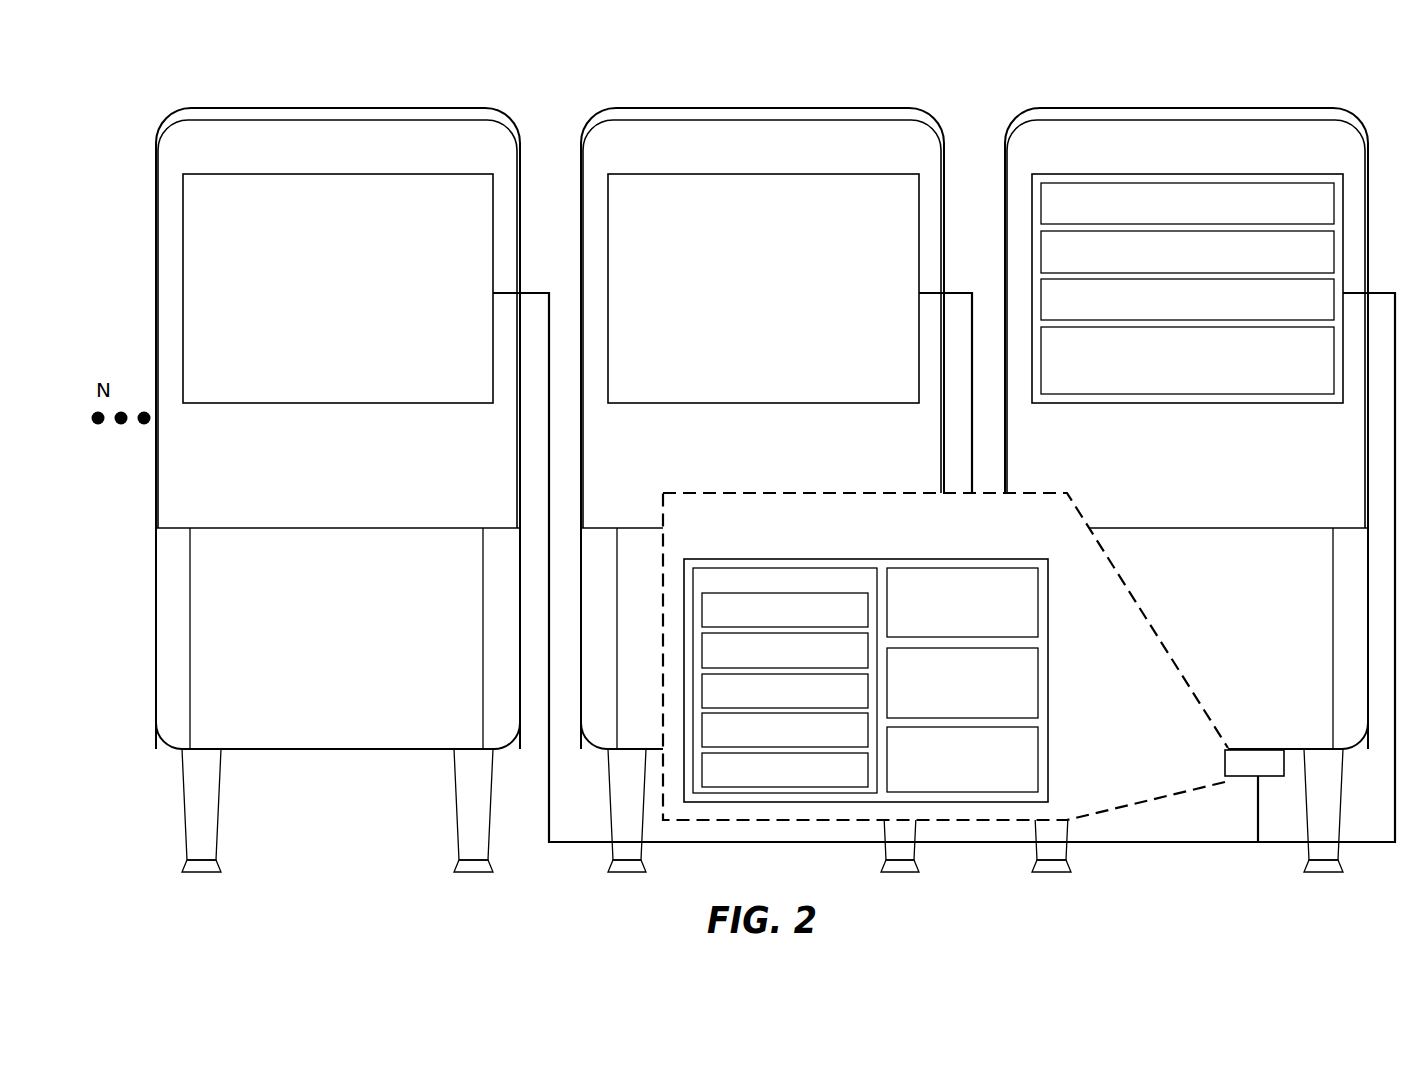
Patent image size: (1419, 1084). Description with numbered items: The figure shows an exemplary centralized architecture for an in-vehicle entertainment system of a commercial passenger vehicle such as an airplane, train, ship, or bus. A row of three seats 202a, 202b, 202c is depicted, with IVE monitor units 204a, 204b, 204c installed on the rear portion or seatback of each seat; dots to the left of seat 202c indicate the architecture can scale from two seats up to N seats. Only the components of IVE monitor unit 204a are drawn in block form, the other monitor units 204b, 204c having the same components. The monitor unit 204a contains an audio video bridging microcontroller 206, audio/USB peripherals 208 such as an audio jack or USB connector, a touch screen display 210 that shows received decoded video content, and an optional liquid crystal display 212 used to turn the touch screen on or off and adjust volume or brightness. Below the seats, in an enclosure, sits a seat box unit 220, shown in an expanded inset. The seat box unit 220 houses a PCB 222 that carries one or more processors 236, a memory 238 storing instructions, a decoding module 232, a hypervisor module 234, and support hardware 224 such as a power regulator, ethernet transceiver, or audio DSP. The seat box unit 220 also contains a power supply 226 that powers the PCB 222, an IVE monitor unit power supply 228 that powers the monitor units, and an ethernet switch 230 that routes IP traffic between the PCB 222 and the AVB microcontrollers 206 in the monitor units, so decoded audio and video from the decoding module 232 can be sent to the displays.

The seat 202a is at (1322, 110).
The seat 202b is at (913, 110).
The seat 202c is at (488, 110).
The IVE monitor unit 204a is at (1187, 265).
The IVE monitor unit 204b is at (822, 174).
The IVE monitor unit 204c is at (398, 174).
The audio video bridging microcontroller 206 is at (1187, 203).
The audio/USB peripherals 208 is at (1187, 252).
The touch screen display 210 is at (1187, 299).
The liquid crystal display 212 is at (1187, 360).
The seat box unit 220 is at (973, 667).
The PCB 222 is at (785, 680).
The support hardware 224 is at (785, 770).
The power supply 226 is at (962, 602).
The IVE monitor unit power supply 228 is at (962, 683).
The ethernet switch 230 is at (962, 759).
The decoding module 232 is at (785, 691).
The hypervisor module 234 is at (785, 730).
The processor 236 is at (785, 610).
The memory 238 is at (785, 650).